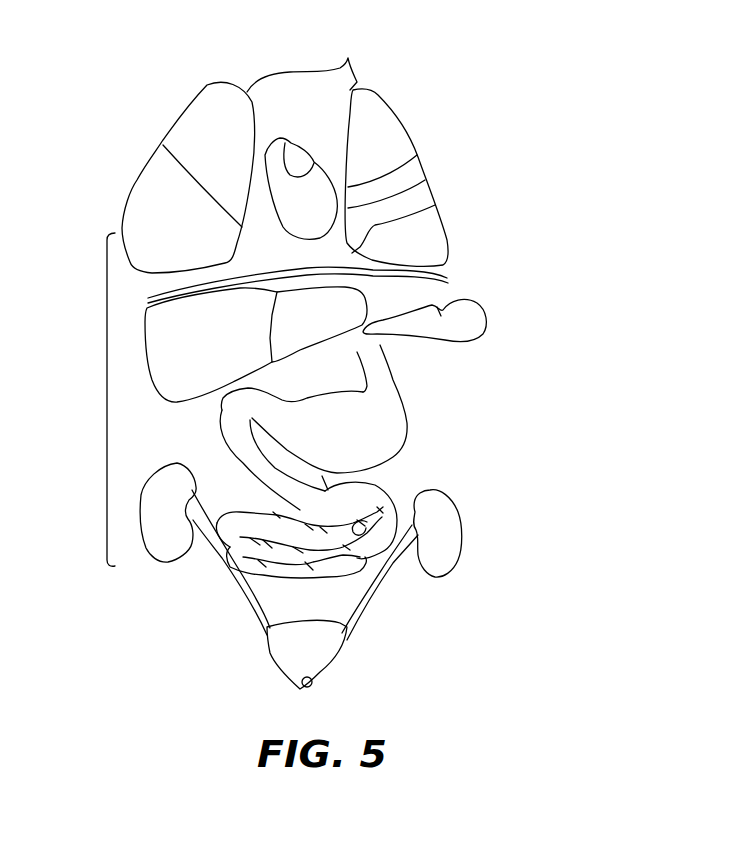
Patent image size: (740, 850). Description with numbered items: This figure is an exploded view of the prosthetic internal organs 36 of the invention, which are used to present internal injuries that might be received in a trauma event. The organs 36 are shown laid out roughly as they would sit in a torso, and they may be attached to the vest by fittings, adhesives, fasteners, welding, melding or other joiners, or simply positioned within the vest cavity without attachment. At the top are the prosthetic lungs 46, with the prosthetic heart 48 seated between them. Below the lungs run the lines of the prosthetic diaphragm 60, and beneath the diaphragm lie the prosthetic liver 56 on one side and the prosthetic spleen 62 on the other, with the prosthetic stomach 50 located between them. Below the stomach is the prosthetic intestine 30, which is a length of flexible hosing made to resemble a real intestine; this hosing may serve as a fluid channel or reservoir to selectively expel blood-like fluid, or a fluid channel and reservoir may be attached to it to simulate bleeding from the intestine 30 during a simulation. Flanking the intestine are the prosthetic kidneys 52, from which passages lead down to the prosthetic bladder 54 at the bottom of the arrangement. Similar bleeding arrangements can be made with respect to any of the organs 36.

The prosthetic lungs 46 is at (348, 58).
The prosthetic heart 48 is at (317, 210).
The prosthetic diaphragm 60 is at (448, 283).
The prosthetic liver 56 is at (343, 303).
The prosthetic spleen 62 is at (483, 327).
The prosthetic stomach 50 is at (387, 403).
The prosthetic intestine 30 is at (370, 498).
The prosthetic kidneys 52 is at (165, 545).
The prosthetic bladder 54 is at (323, 647).
The prosthetic internal organs 36 is at (107, 402).